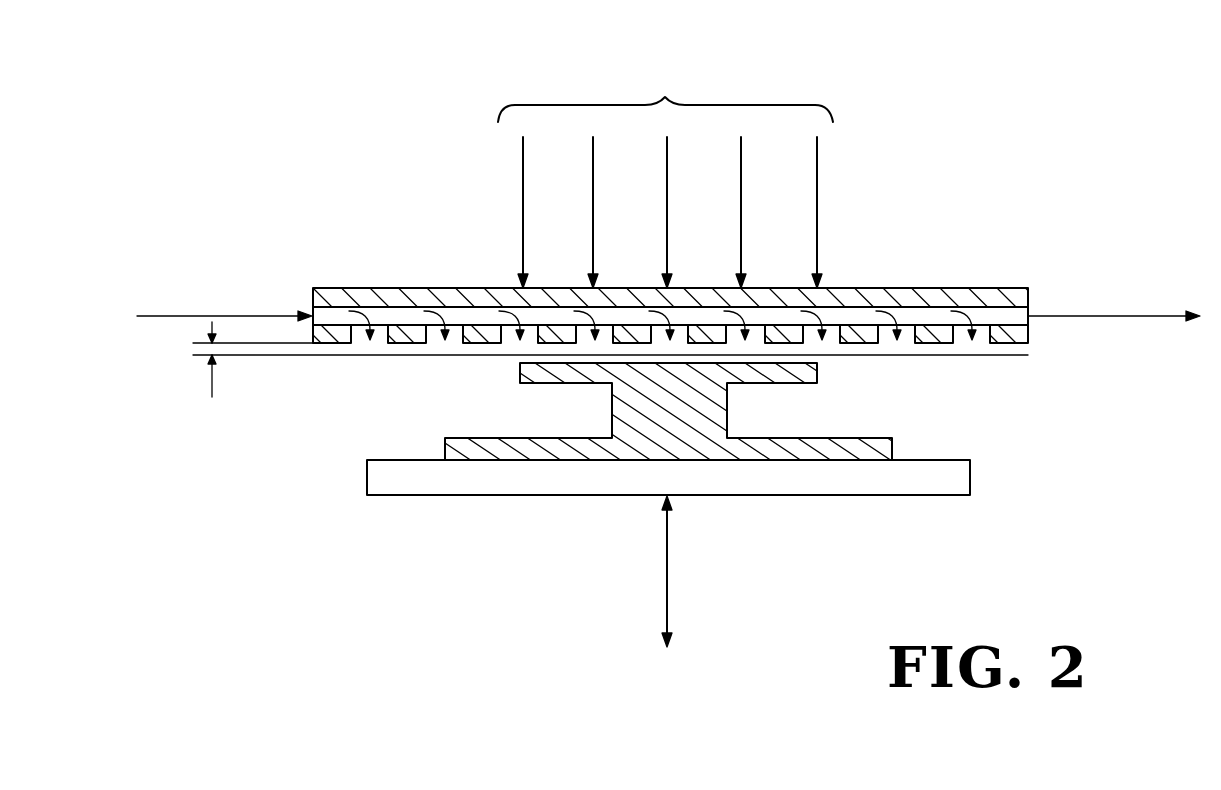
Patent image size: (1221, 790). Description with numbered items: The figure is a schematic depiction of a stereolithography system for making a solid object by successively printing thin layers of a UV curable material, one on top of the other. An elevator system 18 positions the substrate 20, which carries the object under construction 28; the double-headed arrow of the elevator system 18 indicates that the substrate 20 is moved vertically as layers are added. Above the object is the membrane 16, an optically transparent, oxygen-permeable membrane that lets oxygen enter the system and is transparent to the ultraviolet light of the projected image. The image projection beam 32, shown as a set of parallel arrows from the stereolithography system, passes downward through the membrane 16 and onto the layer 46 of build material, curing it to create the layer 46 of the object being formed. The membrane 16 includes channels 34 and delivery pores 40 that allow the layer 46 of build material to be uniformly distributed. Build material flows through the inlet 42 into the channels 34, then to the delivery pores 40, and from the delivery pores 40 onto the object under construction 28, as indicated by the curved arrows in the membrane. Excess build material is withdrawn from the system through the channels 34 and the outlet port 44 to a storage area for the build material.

The membrane 16 is at (903, 290).
The elevator system 18 is at (672, 588).
The substrate 20 is at (608, 496).
The object under construction 28 is at (863, 438).
The image projection beam 32 is at (665, 170).
The channels 34 is at (335, 320).
The delivery pores 40 is at (455, 337).
The inlet 42 is at (235, 313).
The outlet port 44 is at (1077, 315).
The layer 46 is at (273, 350).